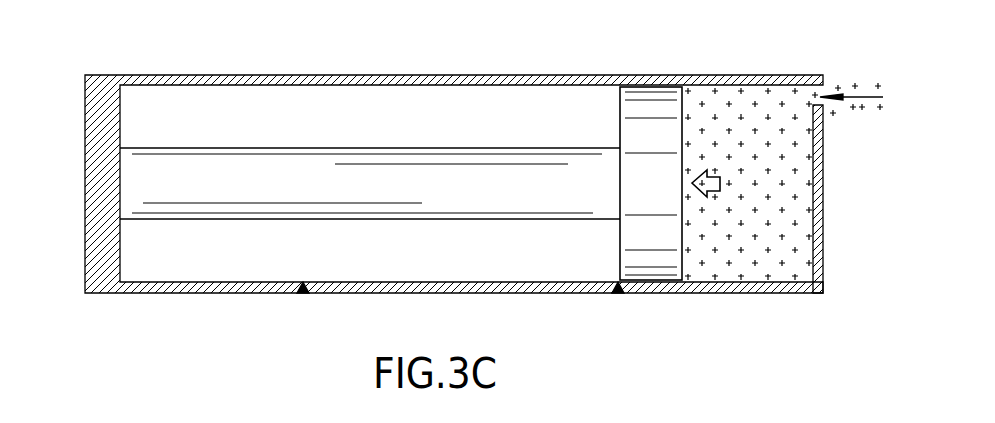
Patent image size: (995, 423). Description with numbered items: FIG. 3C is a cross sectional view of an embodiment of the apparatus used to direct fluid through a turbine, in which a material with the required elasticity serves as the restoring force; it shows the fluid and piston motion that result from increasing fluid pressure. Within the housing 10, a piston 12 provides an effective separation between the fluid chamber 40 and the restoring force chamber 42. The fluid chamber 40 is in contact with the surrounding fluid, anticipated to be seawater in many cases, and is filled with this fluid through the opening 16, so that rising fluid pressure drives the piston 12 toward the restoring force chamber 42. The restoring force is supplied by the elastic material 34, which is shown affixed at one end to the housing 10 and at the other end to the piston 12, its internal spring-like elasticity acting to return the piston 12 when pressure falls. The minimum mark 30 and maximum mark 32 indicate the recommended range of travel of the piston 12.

The housing 10 is at (328, 75).
The piston 12 is at (647, 96).
The opening 16 is at (820, 100).
The minimum mark 30 is at (618, 294).
The maximum mark 32 is at (300, 292).
The elastic material 34 is at (158, 167).
The fluid chamber 40 is at (780, 92).
The restoring force chamber 42 is at (158, 102).